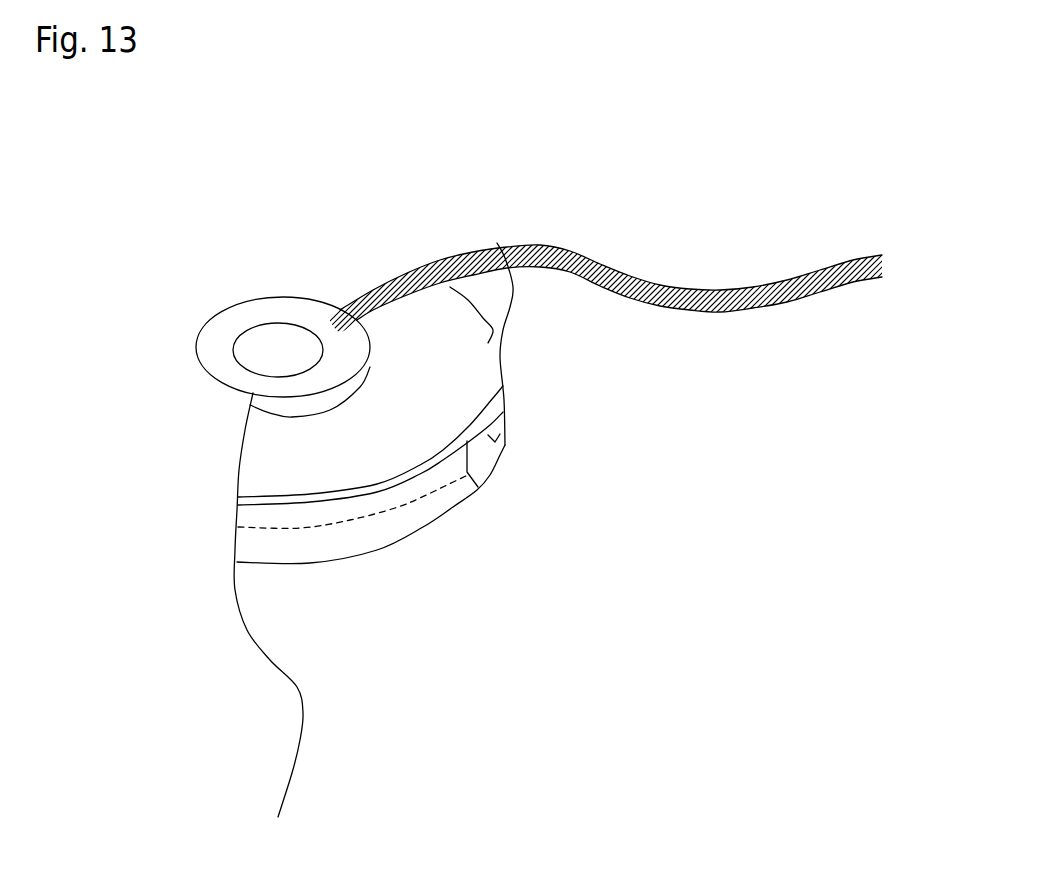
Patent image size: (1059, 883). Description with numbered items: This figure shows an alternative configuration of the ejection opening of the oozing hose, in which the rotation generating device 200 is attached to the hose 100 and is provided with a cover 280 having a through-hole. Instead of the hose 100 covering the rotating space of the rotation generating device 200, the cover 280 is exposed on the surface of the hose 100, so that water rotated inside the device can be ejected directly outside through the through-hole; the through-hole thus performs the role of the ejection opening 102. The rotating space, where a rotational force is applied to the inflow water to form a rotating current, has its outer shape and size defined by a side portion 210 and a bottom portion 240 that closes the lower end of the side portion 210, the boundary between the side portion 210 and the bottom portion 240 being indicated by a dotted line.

The hose 100 is at (685, 288).
The ejection opening 102 is at (266, 350).
The rotation generating device 200 is at (385, 557).
The side portion 210 is at (380, 497).
The bottom portion 240 is at (458, 478).
The cover 280 is at (497, 243).